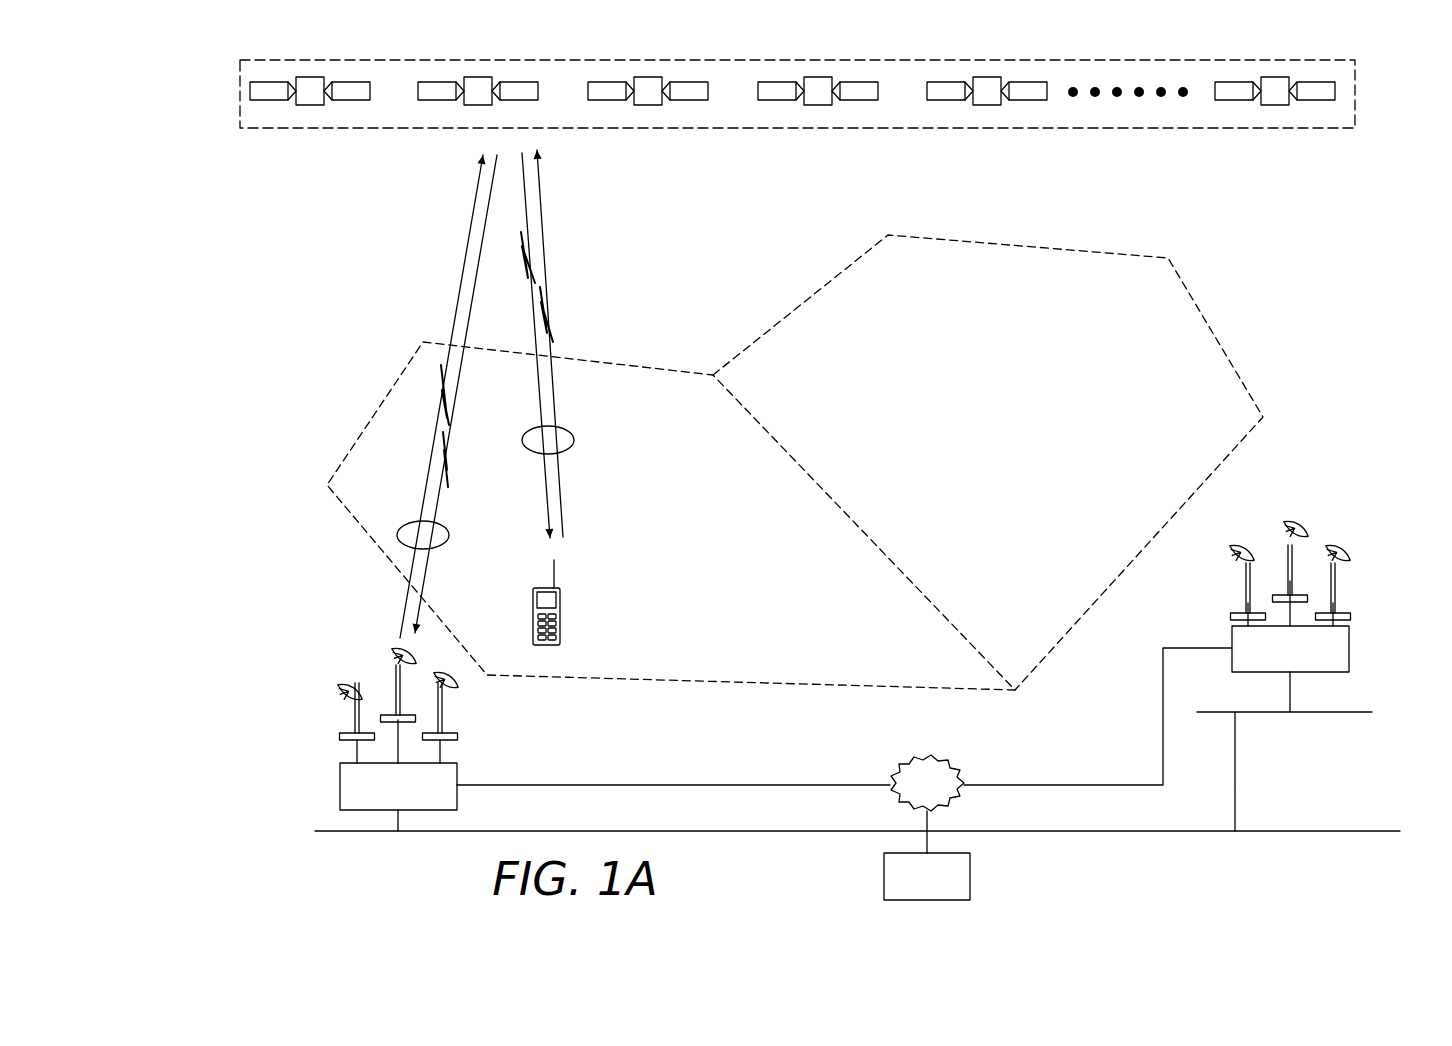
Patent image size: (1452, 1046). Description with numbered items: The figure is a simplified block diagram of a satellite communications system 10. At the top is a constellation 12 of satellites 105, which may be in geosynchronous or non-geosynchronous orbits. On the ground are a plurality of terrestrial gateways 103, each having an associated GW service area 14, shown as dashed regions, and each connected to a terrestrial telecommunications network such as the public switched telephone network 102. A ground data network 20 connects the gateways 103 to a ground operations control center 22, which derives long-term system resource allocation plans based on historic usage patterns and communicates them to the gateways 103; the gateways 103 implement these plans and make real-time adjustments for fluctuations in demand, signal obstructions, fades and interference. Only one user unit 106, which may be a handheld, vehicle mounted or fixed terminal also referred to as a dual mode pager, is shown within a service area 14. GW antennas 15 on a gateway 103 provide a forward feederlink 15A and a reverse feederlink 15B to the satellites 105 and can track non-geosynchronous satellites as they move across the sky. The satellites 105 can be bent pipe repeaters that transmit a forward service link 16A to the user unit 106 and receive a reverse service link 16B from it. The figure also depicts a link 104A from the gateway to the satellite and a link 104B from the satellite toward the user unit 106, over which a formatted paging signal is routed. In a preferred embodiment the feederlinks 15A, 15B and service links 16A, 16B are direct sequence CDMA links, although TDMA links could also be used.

The satellite communications system 10 is at (310, 437).
The constellation 12 is at (1289, 128).
The GW service area 14 is at (1197, 303).
The GW antennas 15 is at (397, 658).
The forward feederlink 15A is at (470, 233).
The reverse feederlink 15B is at (470, 318).
The forward service link 16A is at (550, 213).
The reverse service link 16B is at (532, 320).
The ground data network 20 is at (963, 772).
The ground operations control center 22 is at (970, 860).
The public switched telephone network 102 is at (1268, 830).
The terrestrial gateway 103 is at (340, 785).
The link 104A is at (448, 528).
The link 104B is at (575, 443).
The satellite 105 is at (988, 105).
The user unit 106 is at (560, 620).